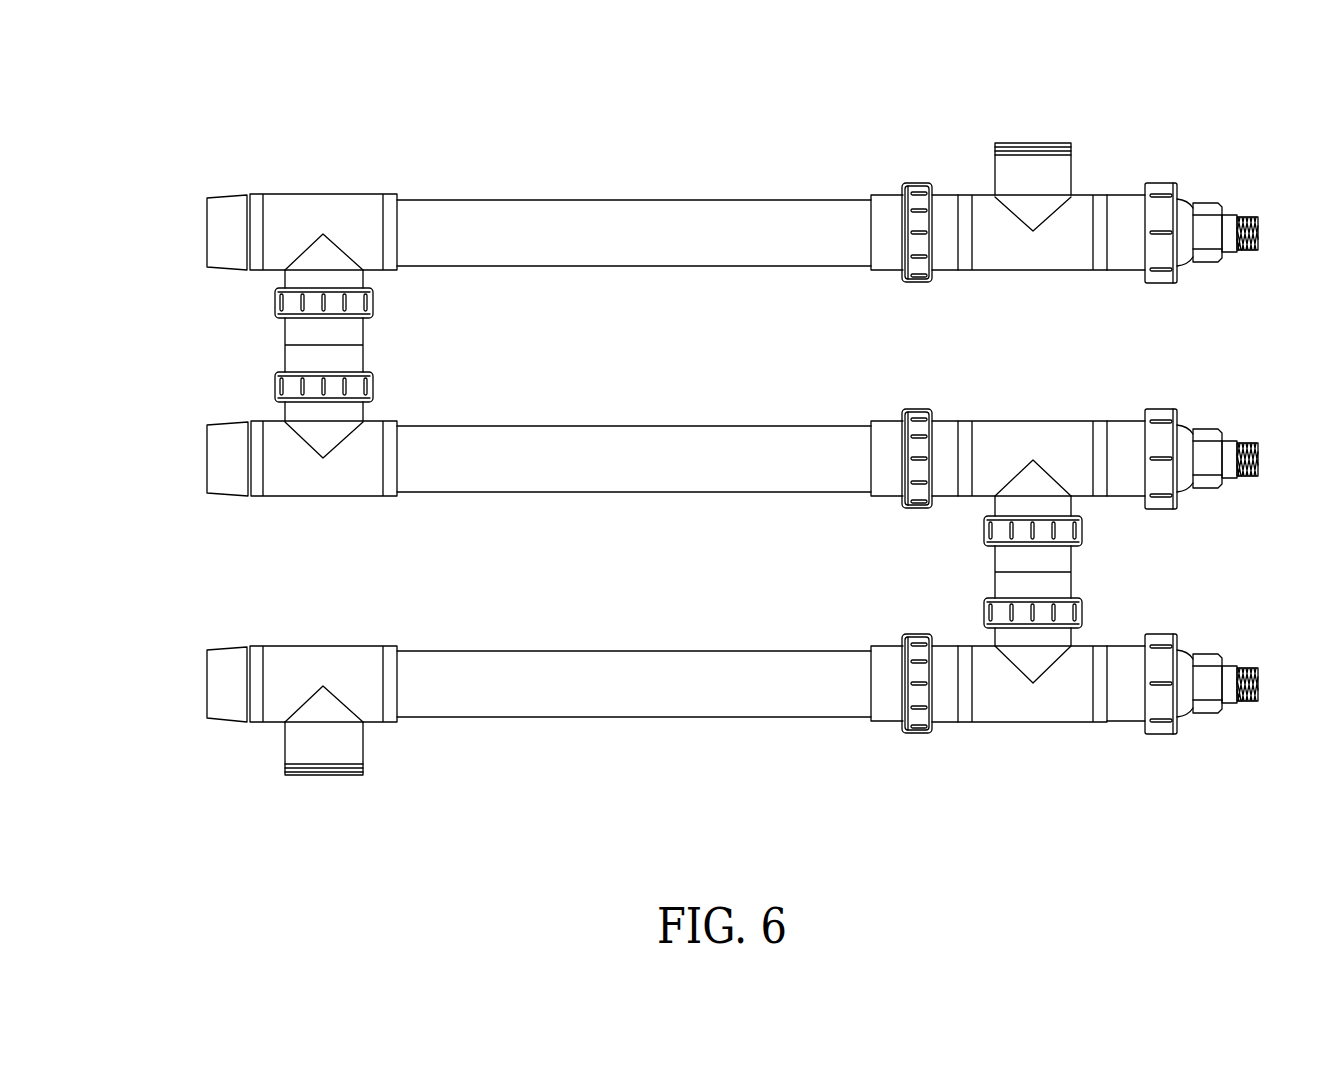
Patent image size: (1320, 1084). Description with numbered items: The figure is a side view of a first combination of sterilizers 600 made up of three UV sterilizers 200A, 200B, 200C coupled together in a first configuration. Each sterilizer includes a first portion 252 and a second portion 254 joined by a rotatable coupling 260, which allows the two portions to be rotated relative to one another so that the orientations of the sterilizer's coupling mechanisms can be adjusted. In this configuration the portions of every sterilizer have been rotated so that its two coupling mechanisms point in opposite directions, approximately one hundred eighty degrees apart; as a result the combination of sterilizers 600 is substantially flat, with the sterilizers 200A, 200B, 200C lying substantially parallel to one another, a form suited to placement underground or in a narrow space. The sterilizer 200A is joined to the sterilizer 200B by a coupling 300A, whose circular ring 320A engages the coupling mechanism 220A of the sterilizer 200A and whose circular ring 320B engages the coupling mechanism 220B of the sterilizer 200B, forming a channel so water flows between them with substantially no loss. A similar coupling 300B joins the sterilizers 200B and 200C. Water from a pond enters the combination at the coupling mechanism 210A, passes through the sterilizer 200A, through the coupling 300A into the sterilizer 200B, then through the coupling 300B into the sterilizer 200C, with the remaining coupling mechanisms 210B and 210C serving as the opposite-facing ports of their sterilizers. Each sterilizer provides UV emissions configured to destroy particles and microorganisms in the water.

The combination of sterilizers 600 is at (691, 491).
The UV sterilizer 200A is at (645, 193).
The UV sterilizer 200B is at (687, 457).
The UV sterilizer 200C is at (691, 687).
The coupling mechanism 210A is at (1062, 140).
The coupling mechanism 210B is at (1083, 519).
The coupling mechanism 210C is at (1072, 640).
The coupling mechanism 220A is at (283, 283).
The coupling mechanism 220B is at (285, 413).
The first portion 252 is at (591, 267).
The second portion 254 is at (1094, 272).
The rotatable coupling 260 is at (921, 183).
The coupling 300A is at (327, 345).
The coupling 300B is at (1072, 558).
The circular ring 320A is at (373, 302).
The circular ring 320B is at (373, 386).